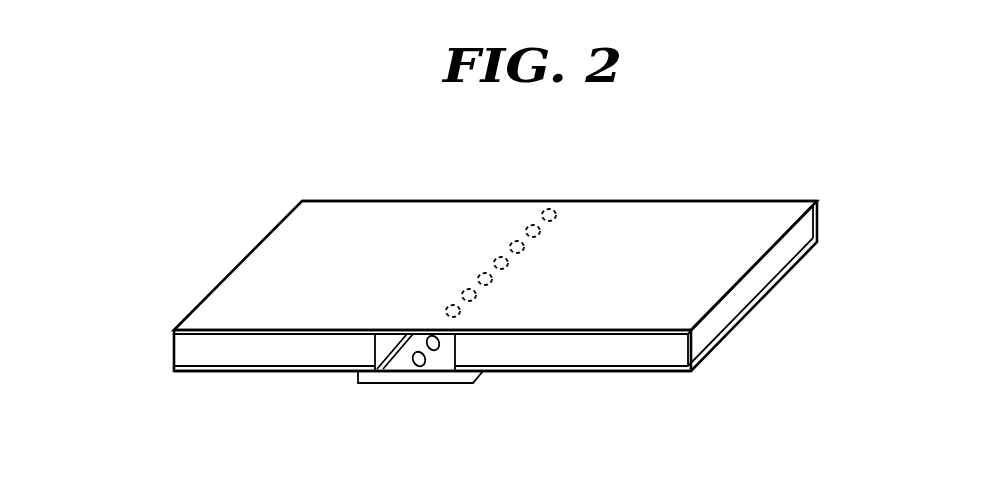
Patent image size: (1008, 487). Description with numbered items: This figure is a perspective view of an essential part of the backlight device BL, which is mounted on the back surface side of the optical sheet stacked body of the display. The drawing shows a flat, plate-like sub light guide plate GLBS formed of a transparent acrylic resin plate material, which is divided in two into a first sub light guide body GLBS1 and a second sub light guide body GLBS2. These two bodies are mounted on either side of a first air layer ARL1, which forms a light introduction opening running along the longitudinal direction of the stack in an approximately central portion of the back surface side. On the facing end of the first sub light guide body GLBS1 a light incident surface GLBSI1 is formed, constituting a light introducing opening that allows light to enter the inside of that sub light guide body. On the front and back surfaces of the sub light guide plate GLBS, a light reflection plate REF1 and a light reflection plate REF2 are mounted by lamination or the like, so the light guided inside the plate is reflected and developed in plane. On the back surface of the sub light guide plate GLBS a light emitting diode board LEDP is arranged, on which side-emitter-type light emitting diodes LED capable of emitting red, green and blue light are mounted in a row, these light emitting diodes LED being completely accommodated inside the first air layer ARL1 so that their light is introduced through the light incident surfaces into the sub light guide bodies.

The backlight device BL is at (251, 242).
The sub light guide plate GLBS is at (171, 360).
The first sub light guide body GLBS1 is at (187, 348).
The second sub light guide body GLBS2 is at (753, 293).
The light incident surface GLBSI1 is at (383, 345).
The first air layer ARL1 is at (397, 362).
The light emitting diode LED is at (420, 367).
The light emitting diode board LEDP is at (460, 384).
The light reflection plate REF1 is at (753, 210).
The light reflection plate REF2 is at (643, 373).